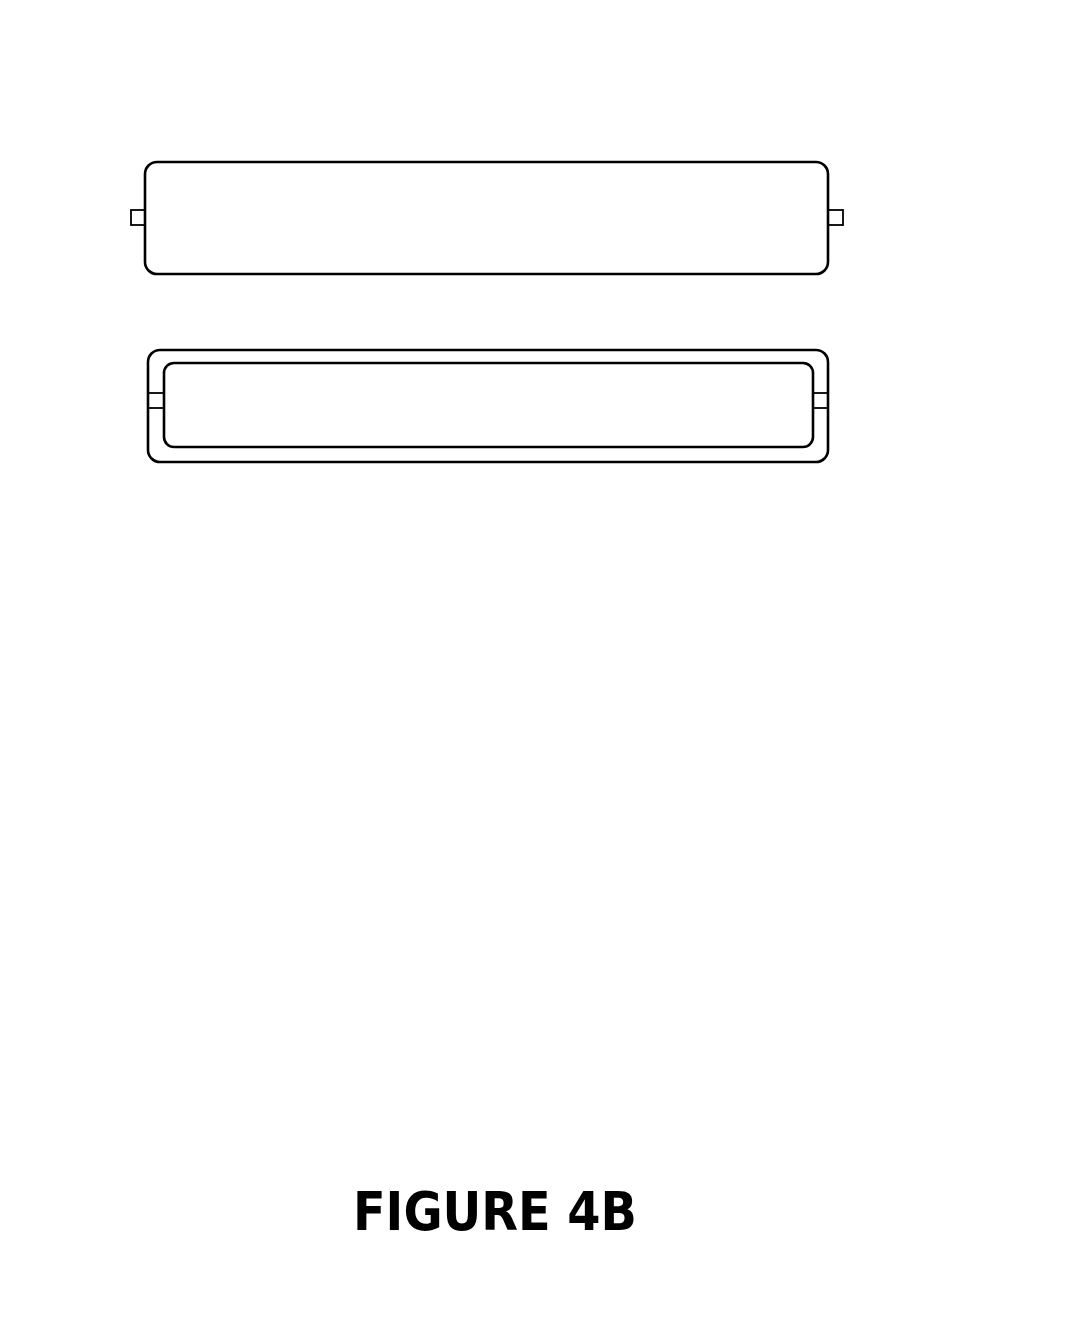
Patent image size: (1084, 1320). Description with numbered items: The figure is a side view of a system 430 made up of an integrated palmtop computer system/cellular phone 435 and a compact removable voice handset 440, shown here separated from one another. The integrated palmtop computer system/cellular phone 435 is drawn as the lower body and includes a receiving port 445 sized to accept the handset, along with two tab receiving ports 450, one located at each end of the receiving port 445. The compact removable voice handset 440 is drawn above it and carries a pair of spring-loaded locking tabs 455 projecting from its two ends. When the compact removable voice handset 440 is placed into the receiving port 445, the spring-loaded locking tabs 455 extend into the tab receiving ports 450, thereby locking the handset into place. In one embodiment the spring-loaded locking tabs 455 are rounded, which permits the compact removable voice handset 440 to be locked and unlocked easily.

The system 430 is at (142, 29).
The integrated palmtop computer system/cellular phone 435 is at (302, 462).
The compact removable voice handset 440 is at (505, 265).
The receiving port 445 is at (507, 440).
The tab receiving ports 450 is at (148, 397).
The spring-loaded locking tabs 455 is at (138, 226).